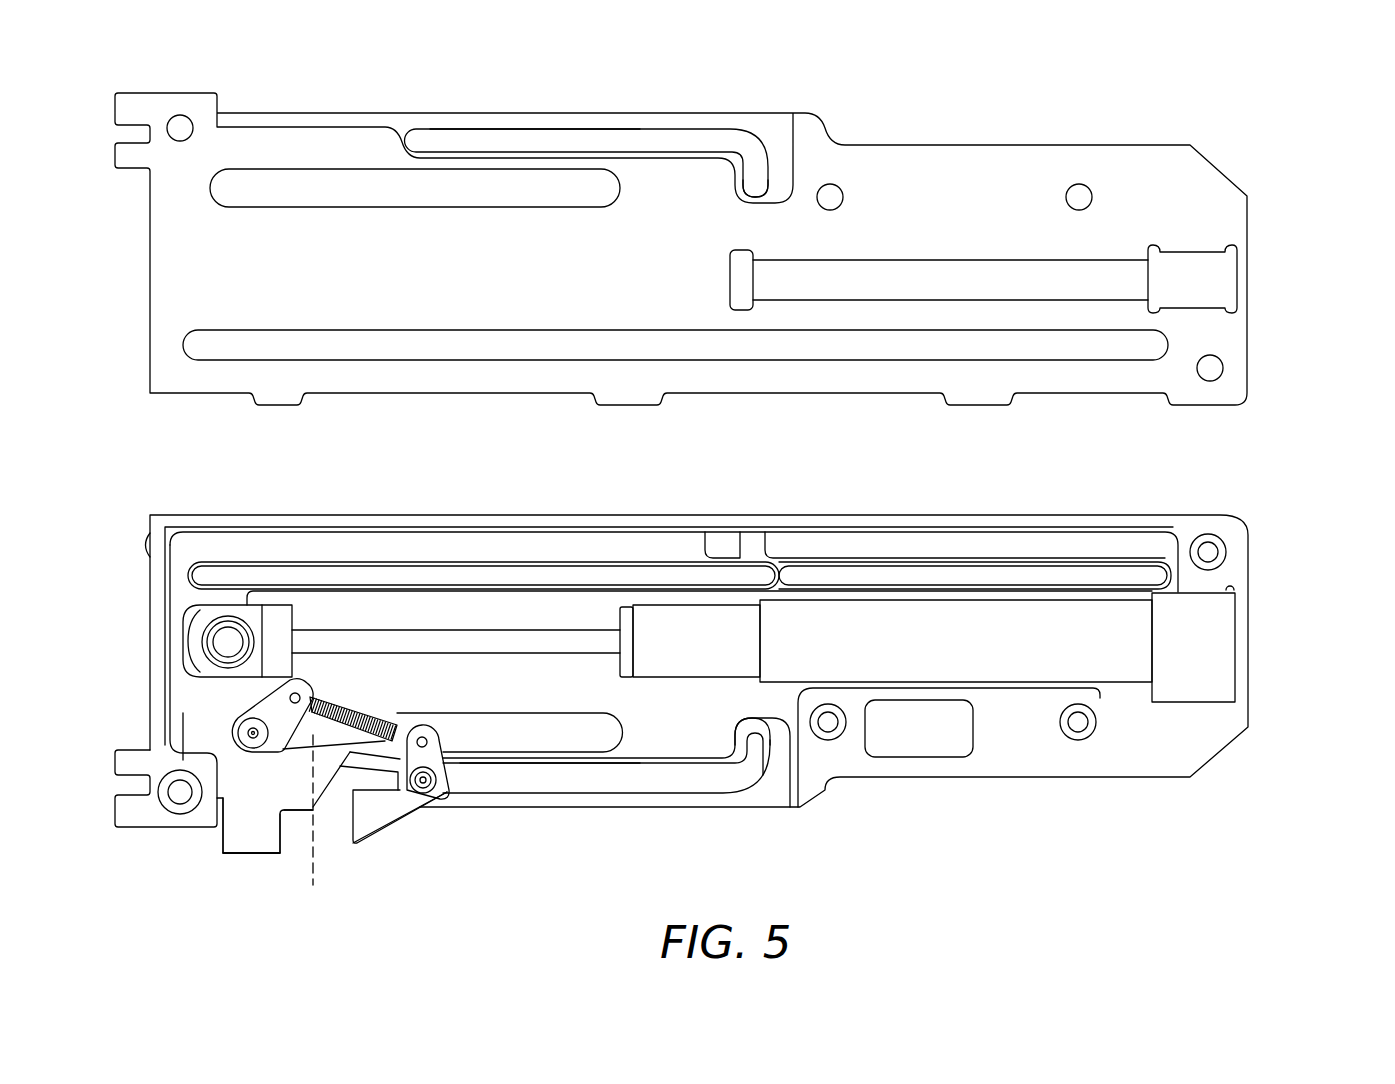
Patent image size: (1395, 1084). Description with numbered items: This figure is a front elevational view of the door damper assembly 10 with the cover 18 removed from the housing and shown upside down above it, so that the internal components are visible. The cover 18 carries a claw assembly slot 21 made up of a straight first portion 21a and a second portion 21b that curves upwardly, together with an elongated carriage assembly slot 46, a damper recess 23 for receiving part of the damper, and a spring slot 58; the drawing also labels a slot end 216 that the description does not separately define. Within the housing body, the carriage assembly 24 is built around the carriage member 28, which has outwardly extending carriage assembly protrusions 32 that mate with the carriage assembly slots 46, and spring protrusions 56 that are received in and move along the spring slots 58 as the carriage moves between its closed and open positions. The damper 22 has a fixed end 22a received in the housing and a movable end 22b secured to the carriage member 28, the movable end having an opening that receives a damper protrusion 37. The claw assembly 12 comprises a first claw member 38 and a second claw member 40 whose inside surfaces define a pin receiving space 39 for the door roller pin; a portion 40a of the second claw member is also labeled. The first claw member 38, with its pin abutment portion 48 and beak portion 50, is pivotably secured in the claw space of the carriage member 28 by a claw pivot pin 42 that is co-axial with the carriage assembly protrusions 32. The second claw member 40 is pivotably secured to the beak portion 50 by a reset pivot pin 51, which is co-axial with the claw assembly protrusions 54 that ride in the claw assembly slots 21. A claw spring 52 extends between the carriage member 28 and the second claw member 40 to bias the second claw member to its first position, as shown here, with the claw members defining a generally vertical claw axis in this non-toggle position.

The door damper assembly 10 is at (727, 224).
The claw assembly 12 is at (197, 871).
The cover 18 is at (1007, 168).
The claw assembly slot 21 is at (697, 140).
The first portion 21a is at (620, 140).
The second portion 21b is at (755, 738).
The slot hook end 216 is at (755, 182).
The damper 22 is at (1008, 615).
The fixed end 22a is at (1212, 522).
The movable end 22b is at (248, 612).
The damper recesses 23 is at (1112, 272).
The carriage assembly 24 is at (193, 597).
The carriage member 28 is at (183, 713).
The carriage assembly protrusion 32 is at (245, 737).
The damper protrusion 37 is at (228, 640).
The first claw member 38 is at (223, 833).
The pin receiving space 39 is at (297, 838).
The second claw member 40 is at (358, 833).
The trigger blade 40a is at (383, 840).
The claw pivot pin 42 is at (250, 728).
The carriage assembly slots 46 is at (420, 188).
The pin abutment portion 48 is at (253, 840).
The beak portion 50 is at (388, 748).
The reset pivot pin 51 is at (422, 797).
The claw spring 52 is at (342, 700).
The claw assembly protrusions 54 is at (447, 765).
The spring protrusions 56 is at (628, 575).
The spring slots 58 is at (395, 345).